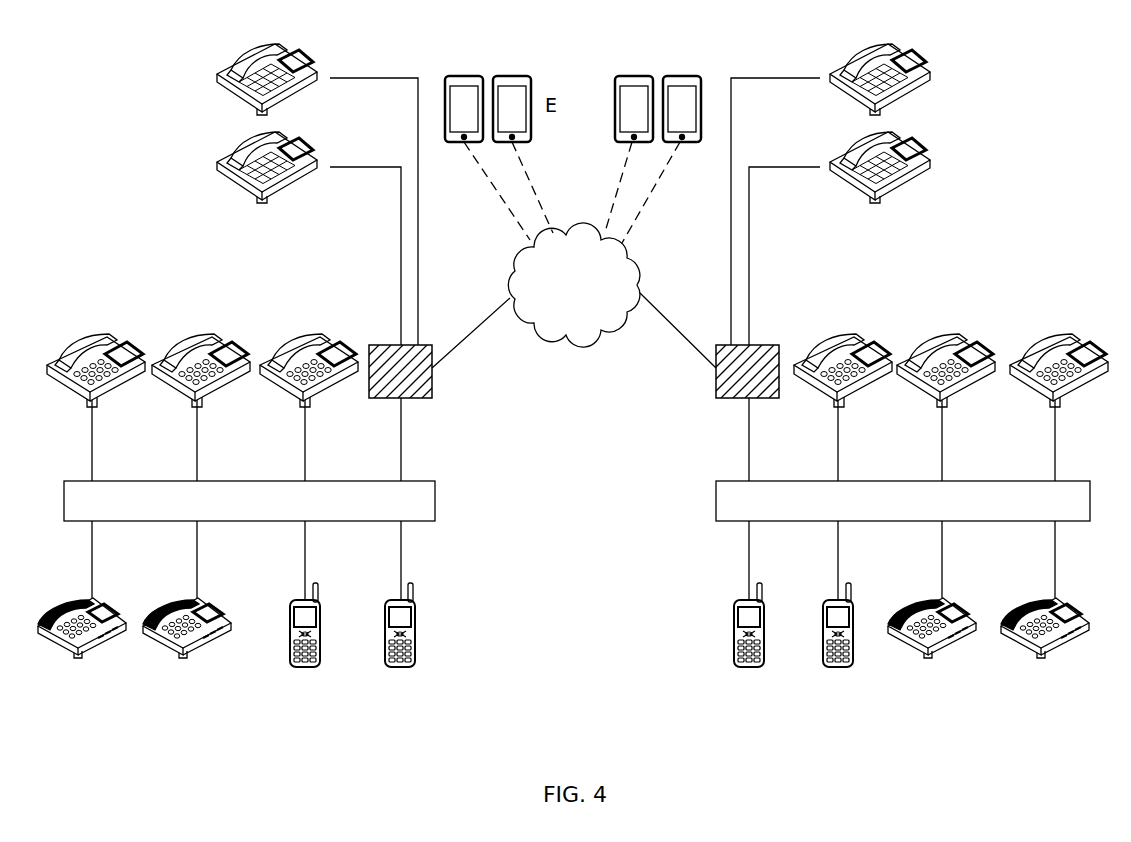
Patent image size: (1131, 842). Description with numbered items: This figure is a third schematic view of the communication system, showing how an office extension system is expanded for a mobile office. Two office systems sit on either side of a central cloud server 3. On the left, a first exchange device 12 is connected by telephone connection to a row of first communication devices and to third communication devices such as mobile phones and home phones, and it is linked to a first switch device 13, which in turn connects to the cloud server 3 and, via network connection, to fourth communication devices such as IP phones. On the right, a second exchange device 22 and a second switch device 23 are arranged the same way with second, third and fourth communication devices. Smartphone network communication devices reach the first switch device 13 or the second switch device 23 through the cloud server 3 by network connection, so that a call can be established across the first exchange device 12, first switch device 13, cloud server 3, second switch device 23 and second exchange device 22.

The cloud server 3 is at (638, 250).
The first exchange device 12 is at (436, 497).
The first switch device 13 is at (427, 343).
The second exchange device 22 is at (715, 500).
The second switch device 23 is at (760, 343).